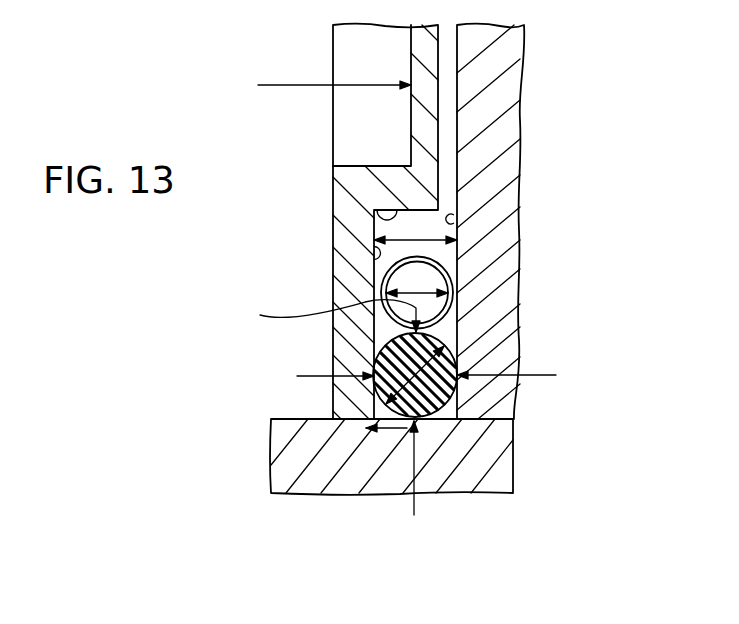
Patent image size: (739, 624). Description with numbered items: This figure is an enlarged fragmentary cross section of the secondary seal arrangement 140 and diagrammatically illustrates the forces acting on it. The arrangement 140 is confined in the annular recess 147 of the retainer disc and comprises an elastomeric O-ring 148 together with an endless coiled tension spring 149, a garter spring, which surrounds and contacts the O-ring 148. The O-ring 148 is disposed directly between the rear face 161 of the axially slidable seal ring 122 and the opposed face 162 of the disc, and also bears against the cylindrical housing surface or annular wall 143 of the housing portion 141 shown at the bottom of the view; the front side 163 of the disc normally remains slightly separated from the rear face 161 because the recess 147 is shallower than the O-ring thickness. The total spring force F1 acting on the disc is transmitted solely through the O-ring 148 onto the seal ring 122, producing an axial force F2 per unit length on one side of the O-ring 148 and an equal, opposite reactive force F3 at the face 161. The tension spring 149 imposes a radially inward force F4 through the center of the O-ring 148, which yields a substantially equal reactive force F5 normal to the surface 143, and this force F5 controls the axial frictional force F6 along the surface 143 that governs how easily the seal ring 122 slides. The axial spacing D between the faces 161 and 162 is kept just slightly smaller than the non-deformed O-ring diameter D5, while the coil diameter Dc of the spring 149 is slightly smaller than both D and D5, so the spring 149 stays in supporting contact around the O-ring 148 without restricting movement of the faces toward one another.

The sealing ring 122 is at (514, 335).
The secondary seal arrangement 140 is at (457, 320).
The base plate 141 is at (500, 466).
The annular wall 143 is at (279, 419).
The annular recess 147 is at (374, 221).
The O-ring 148 is at (449, 405).
The coiled tension spring 149 is at (452, 270).
The rear face 161 is at (457, 224).
The opposed face 162 is at (374, 253).
The front side 163 is at (440, 135).
The axial spacing D is at (430, 238).
The coil diameter Dc is at (408, 292).
The non-deformed diameter D5 is at (400, 363).
The total spring force F1 is at (319, 91).
The force per unit length F2 is at (316, 380).
The reactive force F3 is at (524, 381).
The radially directed force F4 is at (324, 319).
The reactive sealing contact force F5 is at (435, 480).
The frictional force F6 is at (386, 449).